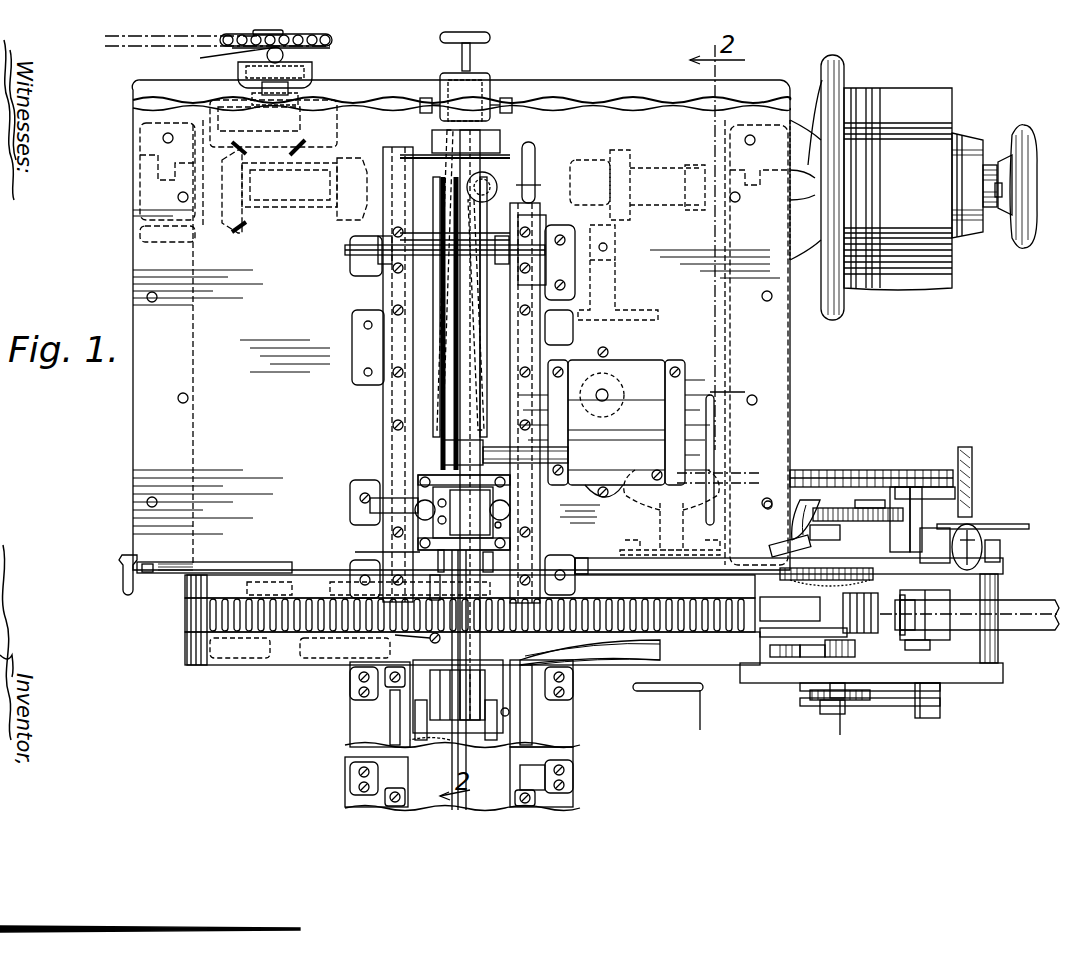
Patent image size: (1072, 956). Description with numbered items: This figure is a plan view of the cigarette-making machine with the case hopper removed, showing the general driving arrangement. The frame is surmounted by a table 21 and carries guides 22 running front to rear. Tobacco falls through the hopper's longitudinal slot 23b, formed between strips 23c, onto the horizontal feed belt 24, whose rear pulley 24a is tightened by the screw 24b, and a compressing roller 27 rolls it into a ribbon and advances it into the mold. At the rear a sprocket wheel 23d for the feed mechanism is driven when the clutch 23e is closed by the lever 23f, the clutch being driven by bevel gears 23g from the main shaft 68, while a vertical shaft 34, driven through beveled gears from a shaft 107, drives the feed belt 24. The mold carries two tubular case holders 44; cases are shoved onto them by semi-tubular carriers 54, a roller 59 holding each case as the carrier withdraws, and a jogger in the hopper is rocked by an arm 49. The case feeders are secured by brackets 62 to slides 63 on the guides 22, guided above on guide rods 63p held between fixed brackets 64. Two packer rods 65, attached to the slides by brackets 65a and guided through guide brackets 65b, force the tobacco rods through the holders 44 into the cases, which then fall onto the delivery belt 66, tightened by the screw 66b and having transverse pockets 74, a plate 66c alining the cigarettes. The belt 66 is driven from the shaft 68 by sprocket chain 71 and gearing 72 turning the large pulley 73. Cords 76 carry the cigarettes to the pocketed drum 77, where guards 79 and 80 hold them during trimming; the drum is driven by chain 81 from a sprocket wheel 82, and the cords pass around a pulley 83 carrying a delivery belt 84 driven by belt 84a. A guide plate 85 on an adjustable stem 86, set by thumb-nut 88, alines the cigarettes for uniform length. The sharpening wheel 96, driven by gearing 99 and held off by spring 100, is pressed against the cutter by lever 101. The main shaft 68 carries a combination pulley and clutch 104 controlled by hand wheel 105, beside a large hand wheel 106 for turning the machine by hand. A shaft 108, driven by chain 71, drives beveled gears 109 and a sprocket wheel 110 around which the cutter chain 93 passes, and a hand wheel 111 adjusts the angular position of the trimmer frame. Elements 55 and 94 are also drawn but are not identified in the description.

The table 21 is at (461, 325).
The guides 22 is at (360, 285).
The longitudinal slot 23b is at (440, 400).
The strips 23c is at (455, 133).
The sprocket wheel 23d is at (332, 40).
The clutch 23e is at (283, 52).
The lever 23f is at (218, 61).
The bevel gears 23g is at (272, 160).
The horizontal belt 24 is at (470, 150).
The rear pulley 24a is at (440, 95).
The screw 24b is at (470, 45).
The compressing roller 27 is at (470, 445).
The vertical shaft 34 is at (605, 390).
The case holders 44 is at (382, 547).
The arm 49 is at (459, 560).
The semi-tubular carriers 54 is at (421, 588).
The screw 55 is at (417, 642).
The roller 59 is at (495, 562).
The brackets 62 is at (510, 752).
The slides 63 is at (530, 210).
The guide rods 63p is at (385, 730).
The fixed brackets 64 is at (360, 780).
The packer rods 65 is at (515, 390).
The brackets 65a is at (355, 320).
The guide brackets 65b is at (360, 255).
The delivery belt 66 is at (225, 660).
The screw 66b is at (170, 575).
The plate 66c is at (628, 660).
The main shaft 68 is at (660, 172).
The sprocket chain 71 is at (739, 449).
The gearing 72 is at (672, 470).
The large pulley 73 is at (703, 724).
The transverse pockets 74 is at (300, 630).
The cords 76 is at (235, 590).
The drum 77 is at (830, 645).
The guard 79 is at (755, 580).
The guard 80 is at (770, 635).
The chain 81 is at (775, 660).
The sprocket wheel 82 is at (650, 691).
The pulley 83 is at (930, 645).
The delivery belt 84 is at (1020, 600).
The belt 84a is at (900, 700).
The plate 85 is at (800, 670).
The adjustable stem 86 is at (825, 675).
The thumb-nut 88 is at (840, 725).
The sprocket chain 93 is at (1010, 522).
The post 94 is at (880, 500).
The sharpening wheel 96 is at (785, 568).
The gearing 99 is at (850, 508).
The spring 100 is at (800, 530).
The lever 101 is at (800, 498).
The combination pulley and clutch 104 is at (893, 288).
The hand wheel 105 is at (1020, 243).
The large hand wheel 106 is at (845, 62).
The shaft 107 is at (612, 290).
The shaft 108 is at (822, 470).
The beveled gears 109 is at (989, 482).
The sprocket wheel 110 is at (986, 547).
The hand wheel 111 is at (953, 615).